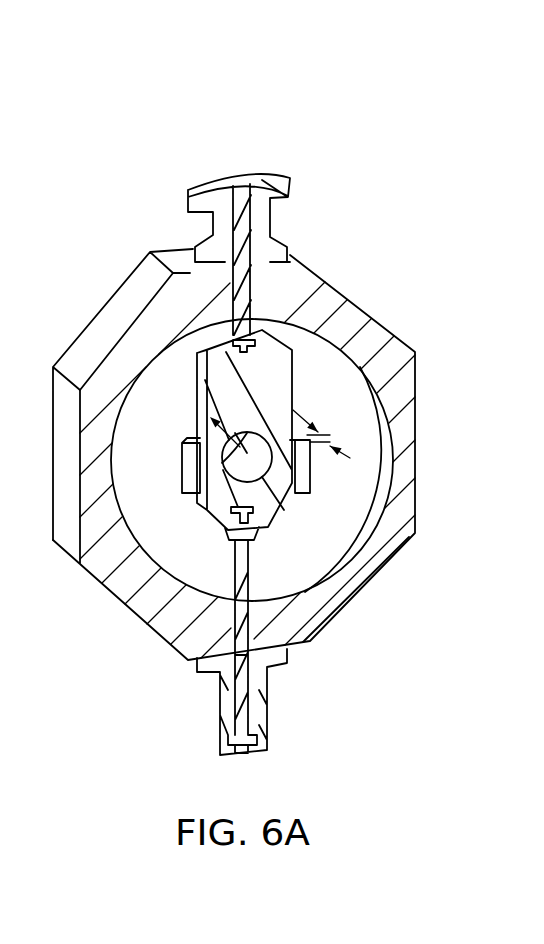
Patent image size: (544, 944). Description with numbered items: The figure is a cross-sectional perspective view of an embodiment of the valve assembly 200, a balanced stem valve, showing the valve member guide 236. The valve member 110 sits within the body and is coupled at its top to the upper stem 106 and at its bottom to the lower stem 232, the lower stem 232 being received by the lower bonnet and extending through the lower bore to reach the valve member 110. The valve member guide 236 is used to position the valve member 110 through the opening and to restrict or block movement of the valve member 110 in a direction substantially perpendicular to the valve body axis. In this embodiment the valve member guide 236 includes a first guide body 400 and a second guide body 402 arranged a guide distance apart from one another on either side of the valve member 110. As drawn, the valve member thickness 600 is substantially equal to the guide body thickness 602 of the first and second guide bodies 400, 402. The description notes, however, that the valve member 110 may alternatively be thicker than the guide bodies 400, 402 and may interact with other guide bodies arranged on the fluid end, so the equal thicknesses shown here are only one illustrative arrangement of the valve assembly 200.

The valve assembly 200 is at (336, 138).
The upper stem 106 is at (243, 232).
The valve member 110 is at (224, 363).
The valve member guide 236 is at (165, 518).
The lower stem 232 is at (268, 668).
The first guide body 400 is at (195, 478).
The second guide body 402 is at (298, 494).
The valve member thickness 600 is at (192, 403).
The guide body thickness 602 is at (350, 458).